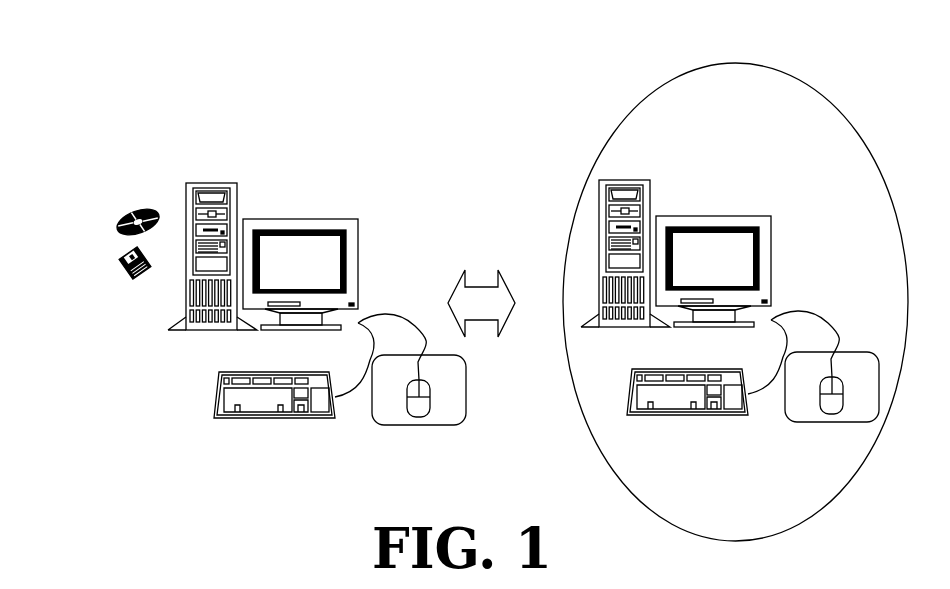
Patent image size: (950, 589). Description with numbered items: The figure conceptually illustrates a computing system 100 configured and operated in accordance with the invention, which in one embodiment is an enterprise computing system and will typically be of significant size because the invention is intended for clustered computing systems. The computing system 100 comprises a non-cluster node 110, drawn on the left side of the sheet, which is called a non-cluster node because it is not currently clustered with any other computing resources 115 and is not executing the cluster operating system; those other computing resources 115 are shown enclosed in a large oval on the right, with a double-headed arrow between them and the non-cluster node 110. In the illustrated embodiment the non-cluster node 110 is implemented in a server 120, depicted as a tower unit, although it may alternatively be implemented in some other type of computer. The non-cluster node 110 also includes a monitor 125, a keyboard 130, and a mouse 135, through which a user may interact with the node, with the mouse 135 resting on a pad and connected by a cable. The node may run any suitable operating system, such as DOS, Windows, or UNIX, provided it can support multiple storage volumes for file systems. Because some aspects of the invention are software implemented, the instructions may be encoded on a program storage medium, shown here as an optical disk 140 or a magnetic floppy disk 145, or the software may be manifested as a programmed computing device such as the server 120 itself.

The computing system 100 is at (158, 38).
The non-cluster node 110 is at (215, 153).
The computing resources 115 is at (597, 163).
The server 120 is at (238, 184).
The monitor 125 is at (358, 222).
The keyboard 130 is at (214, 411).
The mouse 135 is at (427, 413).
The optical disk 140 is at (125, 215).
The floppy disk 145 is at (118, 263).